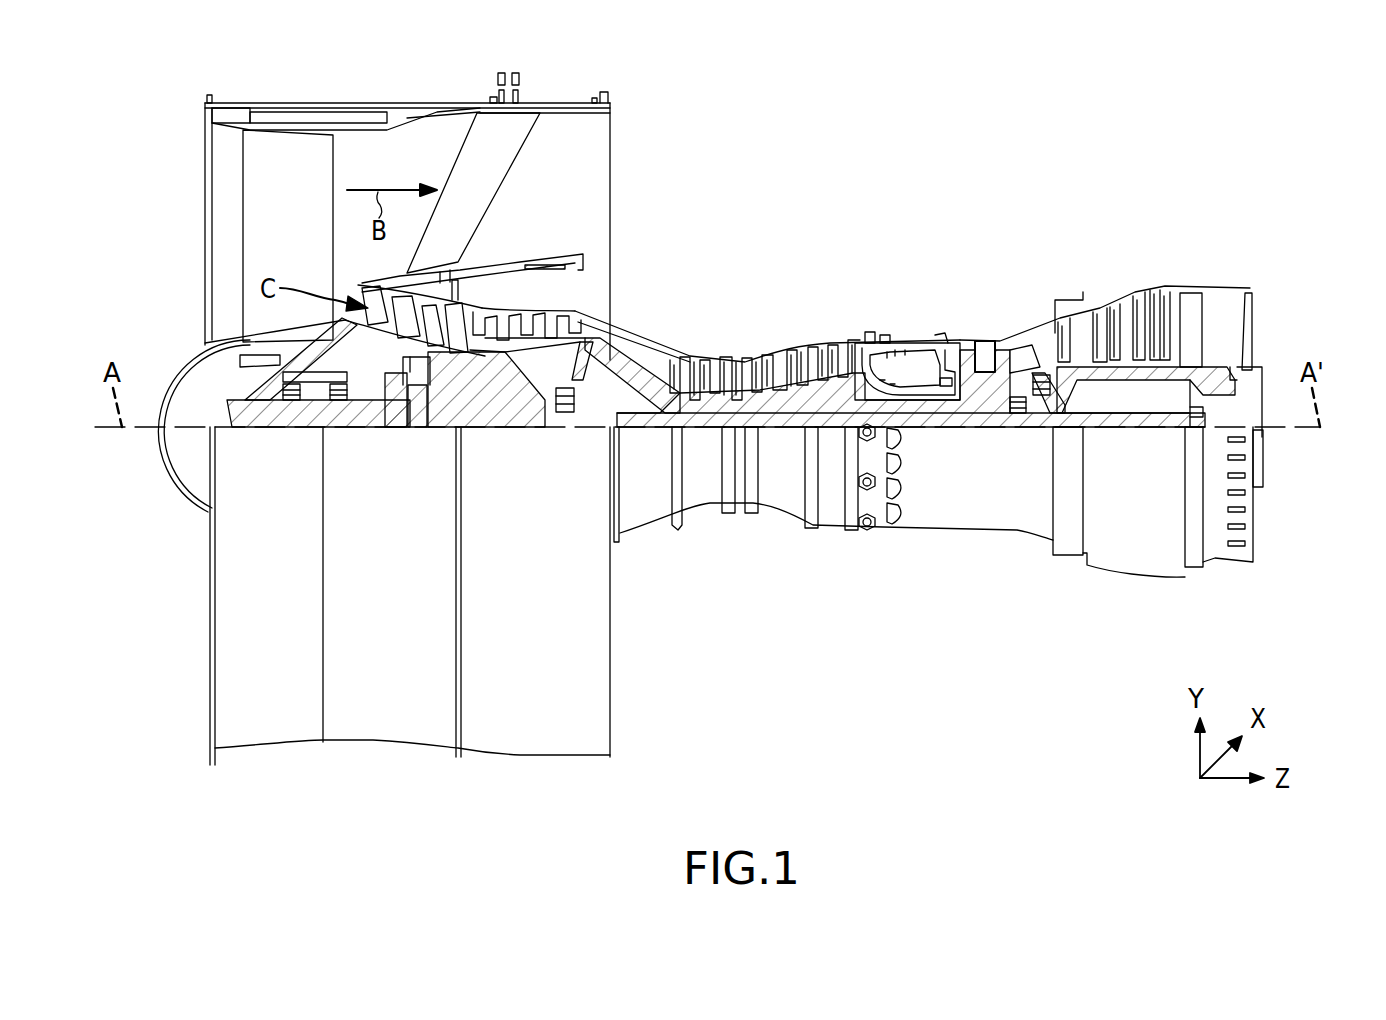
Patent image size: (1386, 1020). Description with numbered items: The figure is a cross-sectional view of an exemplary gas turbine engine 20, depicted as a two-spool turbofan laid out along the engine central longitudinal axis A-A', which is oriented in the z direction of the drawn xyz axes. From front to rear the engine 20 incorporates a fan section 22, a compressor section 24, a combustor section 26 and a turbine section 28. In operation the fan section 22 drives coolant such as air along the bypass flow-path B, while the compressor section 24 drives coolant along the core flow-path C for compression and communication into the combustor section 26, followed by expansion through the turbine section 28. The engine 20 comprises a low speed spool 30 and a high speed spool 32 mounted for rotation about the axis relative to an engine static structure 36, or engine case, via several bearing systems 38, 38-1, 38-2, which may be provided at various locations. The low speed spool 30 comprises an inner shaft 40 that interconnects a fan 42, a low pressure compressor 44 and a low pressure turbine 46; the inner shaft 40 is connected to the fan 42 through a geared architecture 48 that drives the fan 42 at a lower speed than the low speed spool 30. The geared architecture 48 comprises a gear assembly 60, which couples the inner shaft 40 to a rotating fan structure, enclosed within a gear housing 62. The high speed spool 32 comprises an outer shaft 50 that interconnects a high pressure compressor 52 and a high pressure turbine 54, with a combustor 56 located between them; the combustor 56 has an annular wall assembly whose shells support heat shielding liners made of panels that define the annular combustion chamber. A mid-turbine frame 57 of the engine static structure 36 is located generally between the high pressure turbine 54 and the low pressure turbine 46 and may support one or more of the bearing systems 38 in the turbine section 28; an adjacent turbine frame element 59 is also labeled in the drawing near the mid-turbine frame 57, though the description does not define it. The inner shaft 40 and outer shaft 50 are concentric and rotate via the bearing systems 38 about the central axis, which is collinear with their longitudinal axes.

The gas turbine engine 20 is at (960, 140).
The fan section 22 is at (455, 82).
The compressor section 24 is at (470, 218).
The combustor section 26 is at (965, 218).
The turbine section 28 is at (1190, 218).
The low speed spool 30 is at (783, 447).
The high speed spool 32 is at (828, 385).
The engine static structure 36 is at (385, 752).
The bearing system 38 is at (1036, 420).
The bearing system 38-1 is at (296, 400).
The bearing system 38-2 is at (566, 418).
The inner shaft 40 is at (634, 430).
The fan 42 is at (295, 234).
The low pressure compressor 44 is at (540, 320).
The low pressure turbine 46 is at (1120, 306).
The geared architecture 48 is at (420, 445).
The outer shaft 50 is at (905, 420).
The high pressure compressor 52 is at (768, 378).
The high pressure turbine 54 is at (984, 340).
The combustor 56 is at (906, 362).
The mid-turbine frame 57 is at (1030, 345).
The turbine frame vane 59 is at (1037, 350).
The gear assembly 60 is at (438, 410).
The gear housing 62 is at (430, 378).